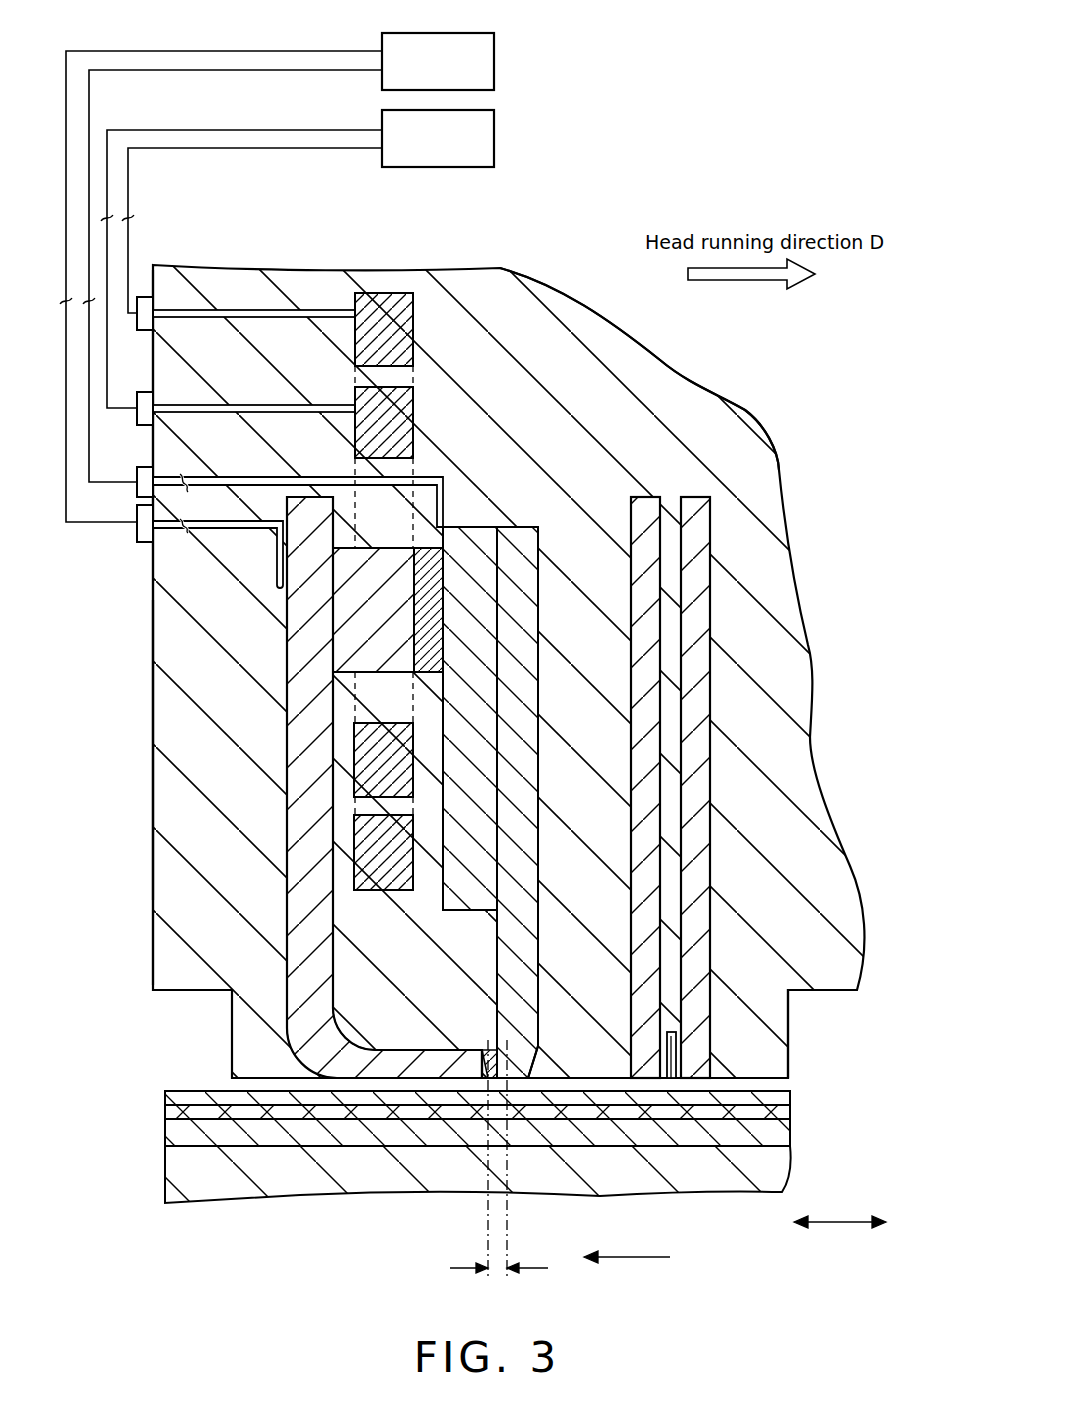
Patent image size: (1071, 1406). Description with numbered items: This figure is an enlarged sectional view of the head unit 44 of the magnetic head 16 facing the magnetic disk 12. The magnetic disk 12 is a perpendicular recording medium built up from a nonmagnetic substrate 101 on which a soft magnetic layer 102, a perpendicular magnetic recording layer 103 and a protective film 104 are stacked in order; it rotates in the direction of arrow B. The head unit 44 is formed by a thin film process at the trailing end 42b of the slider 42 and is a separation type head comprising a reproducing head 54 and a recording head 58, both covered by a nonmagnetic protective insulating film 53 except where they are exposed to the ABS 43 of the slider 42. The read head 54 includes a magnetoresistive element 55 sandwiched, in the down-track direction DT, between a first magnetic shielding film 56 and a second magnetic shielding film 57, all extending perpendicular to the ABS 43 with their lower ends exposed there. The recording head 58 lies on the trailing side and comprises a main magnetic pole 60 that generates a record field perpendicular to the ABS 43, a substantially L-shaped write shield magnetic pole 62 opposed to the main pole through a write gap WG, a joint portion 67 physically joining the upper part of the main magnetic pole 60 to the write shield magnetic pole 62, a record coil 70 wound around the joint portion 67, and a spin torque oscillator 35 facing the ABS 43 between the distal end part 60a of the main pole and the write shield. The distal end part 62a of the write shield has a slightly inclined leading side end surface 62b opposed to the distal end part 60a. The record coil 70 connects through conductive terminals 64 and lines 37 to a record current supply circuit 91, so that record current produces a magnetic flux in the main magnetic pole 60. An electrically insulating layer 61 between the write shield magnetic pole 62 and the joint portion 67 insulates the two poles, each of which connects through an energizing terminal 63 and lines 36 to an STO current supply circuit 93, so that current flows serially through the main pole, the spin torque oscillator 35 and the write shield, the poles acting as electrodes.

The magnetic disk 12 is at (501, 1179).
The magnetic head 16 is at (217, 246).
The spin torque oscillator 35 is at (491, 1050).
The lines 36 is at (287, 68).
The lines 37 is at (287, 148).
The slider 42 is at (768, 482).
The trailing end of the slider 42b is at (153, 907).
The ABS 43 is at (847, 996).
The head unit 44 is at (634, 368).
The protective insulating film 53 is at (185, 730).
The reproducing head 54 is at (732, 485).
The magnetoresistive element 55 is at (678, 1044).
The first magnetic shielding film 56 is at (706, 812).
The second magnetic shielding film 57 is at (648, 780).
The recording head 58 is at (510, 247).
The main magnetic pole 60 is at (520, 692).
The distal end part of the main magnetic pole 60a is at (519, 1040).
The electrically insulating layer 61 is at (423, 657).
The write shield magnetic pole 62 is at (307, 818).
The distal end part of the write shield magnetic pole 62a is at (380, 1055).
The leading side end surface 62b is at (480, 1054).
The energizing terminal 63 is at (142, 467).
The conductive terminal 64 is at (142, 295).
The joint portion 67 is at (348, 598).
The record coil 70 is at (405, 328).
The record current supply circuit 91 is at (494, 140).
The STO current supply circuit 93 is at (494, 62).
The substrate 101 is at (780, 1174).
The soft magnetic layer 102 is at (782, 1133).
The perpendicular magnetic recording layer 103 is at (782, 1110).
The protective film 104 is at (784, 1093).
The write gap WG is at (499, 1286).
The arrow B is at (627, 1270).
The down-track direction DT is at (840, 1236).